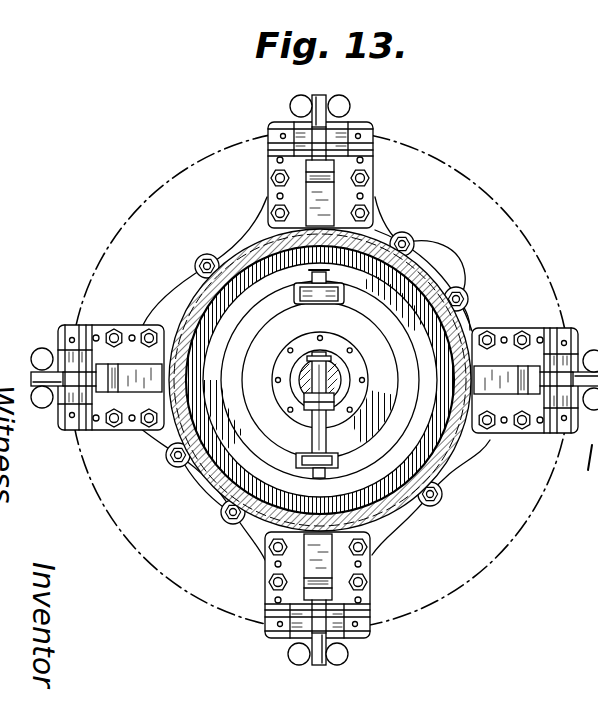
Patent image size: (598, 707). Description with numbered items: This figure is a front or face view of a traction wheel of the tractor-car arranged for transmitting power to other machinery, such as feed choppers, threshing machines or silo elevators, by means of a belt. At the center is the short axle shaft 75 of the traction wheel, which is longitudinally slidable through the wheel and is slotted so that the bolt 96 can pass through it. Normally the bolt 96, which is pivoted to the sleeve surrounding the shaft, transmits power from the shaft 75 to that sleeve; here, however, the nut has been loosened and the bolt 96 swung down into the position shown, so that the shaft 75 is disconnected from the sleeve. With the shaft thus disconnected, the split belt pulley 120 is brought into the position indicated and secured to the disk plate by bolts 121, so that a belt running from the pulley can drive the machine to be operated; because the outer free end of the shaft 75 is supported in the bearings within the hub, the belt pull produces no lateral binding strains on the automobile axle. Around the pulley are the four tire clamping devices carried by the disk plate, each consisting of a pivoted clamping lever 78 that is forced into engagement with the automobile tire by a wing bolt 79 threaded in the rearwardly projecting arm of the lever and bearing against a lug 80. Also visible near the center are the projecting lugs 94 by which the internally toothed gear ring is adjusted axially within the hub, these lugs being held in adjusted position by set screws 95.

The axle shaft 75 is at (316, 376).
The clamping lever 78 is at (347, 642).
The wing bolt 79 is at (298, 600).
The lug 80 is at (336, 562).
The projecting lug 94 is at (303, 287).
The set screw 95 is at (317, 276).
The bolt 96 is at (313, 434).
The split belt pulley 120 is at (198, 302).
The bolt 121 is at (196, 265).